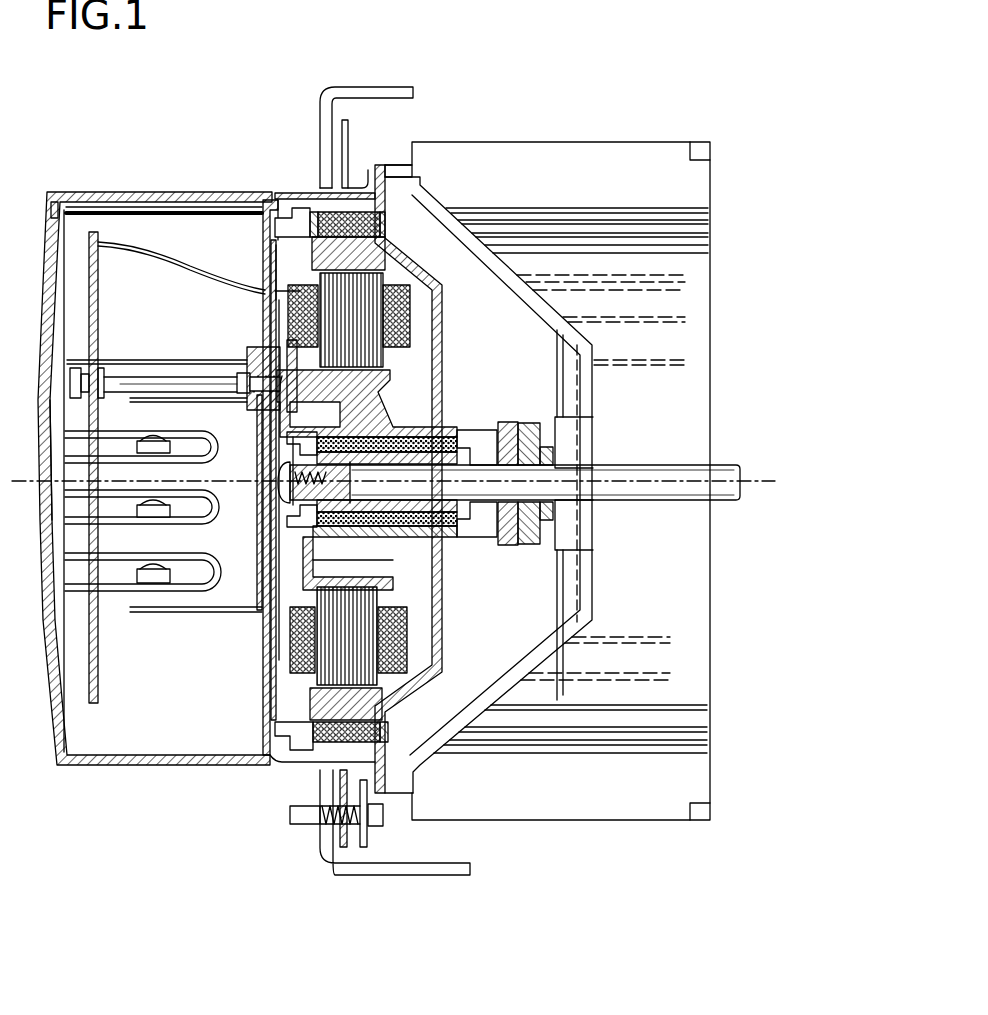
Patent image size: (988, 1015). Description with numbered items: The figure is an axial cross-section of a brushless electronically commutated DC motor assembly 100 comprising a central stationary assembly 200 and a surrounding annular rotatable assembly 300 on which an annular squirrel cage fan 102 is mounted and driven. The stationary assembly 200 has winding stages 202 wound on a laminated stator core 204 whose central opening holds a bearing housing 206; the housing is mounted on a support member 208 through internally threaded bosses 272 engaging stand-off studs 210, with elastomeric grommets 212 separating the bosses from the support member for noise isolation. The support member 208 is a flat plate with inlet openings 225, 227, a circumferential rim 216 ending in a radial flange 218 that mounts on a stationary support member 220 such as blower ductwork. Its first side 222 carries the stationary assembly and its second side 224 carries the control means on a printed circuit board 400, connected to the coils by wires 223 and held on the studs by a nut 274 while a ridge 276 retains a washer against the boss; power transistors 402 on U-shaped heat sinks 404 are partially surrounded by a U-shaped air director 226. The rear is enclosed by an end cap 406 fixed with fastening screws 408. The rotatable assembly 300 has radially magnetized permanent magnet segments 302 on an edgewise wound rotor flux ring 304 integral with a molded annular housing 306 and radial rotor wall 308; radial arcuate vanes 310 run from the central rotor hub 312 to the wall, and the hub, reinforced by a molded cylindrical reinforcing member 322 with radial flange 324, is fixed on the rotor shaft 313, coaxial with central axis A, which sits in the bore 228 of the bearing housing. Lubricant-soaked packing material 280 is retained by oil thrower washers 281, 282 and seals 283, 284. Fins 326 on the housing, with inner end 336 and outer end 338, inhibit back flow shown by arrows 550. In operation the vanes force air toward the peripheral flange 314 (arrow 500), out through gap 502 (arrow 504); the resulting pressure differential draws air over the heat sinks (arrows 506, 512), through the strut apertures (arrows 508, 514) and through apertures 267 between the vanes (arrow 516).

The motor assembly 100 is at (212, 132).
The annular squirrel cage fan 102 is at (565, 145).
The stationary assembly 200 is at (272, 760).
The winding stages 202 is at (405, 335).
The laminated stator core 204 is at (375, 367).
The bearing housing 206 is at (420, 590).
The support member 208 is at (268, 236).
The stand-off studs 210 is at (160, 378).
The elastomeric grommets 212 is at (268, 340).
The circumferential annular rim 216 is at (275, 762).
The radial flange 218 is at (346, 848).
The stationary support member 220 is at (350, 88).
The first side 222 is at (272, 652).
The wires 223 is at (118, 250).
The second side 224 is at (262, 690).
The inlet opening 225 is at (270, 636).
The U-shaped air director 226 is at (200, 612).
The inlet opening 227 is at (270, 277).
The bore 228 is at (470, 430).
The apertures 267 is at (295, 540).
The internally threaded bosses 272 is at (260, 350).
The nut 274 is at (68, 383).
The ridge 276 is at (240, 380).
The lubricant-soaked packing material 280 is at (380, 527).
The oil thrower washer 281 is at (497, 540).
The oil thrower washer 282 is at (330, 520).
The seal 283 is at (480, 430).
The seal 284 is at (296, 515).
The rotatable assembly 300 is at (535, 785).
The permanent magnet segments 302 is at (370, 262).
The rotor flux ring 304 is at (372, 738).
The molded annular housing 306 is at (385, 775).
The radial rotor wall 308 is at (445, 560).
The radial arcuate vanes 310 is at (530, 255).
The central rotor hub 312 is at (565, 420).
The rotor shaft 313 is at (680, 462).
The peripheral flange 314 is at (400, 180).
The cylindrical reinforcing member 322 is at (540, 455).
The radial flange 324 is at (520, 436).
The fins 326 is at (298, 198).
The inner end 336 is at (284, 240).
The outer end 338 is at (308, 225).
The printed circuit board 400 is at (98, 295).
The power transistors 402 is at (150, 441).
The U-shaped heat sinks 404 is at (200, 452).
The end cap 406 is at (44, 600).
The fastening screws 408 is at (100, 207).
The arrow 500 is at (482, 295).
The gap 502 is at (410, 125).
The arrow 504 is at (435, 165).
The arrow 506 is at (256, 606).
The arrow 508 is at (353, 558).
The arrow 512 is at (540, 565).
The arrow 514 is at (313, 415).
The arrow 516 is at (470, 398).
The arrows 550 is at (345, 185).
The central axis A is at (391, 469).